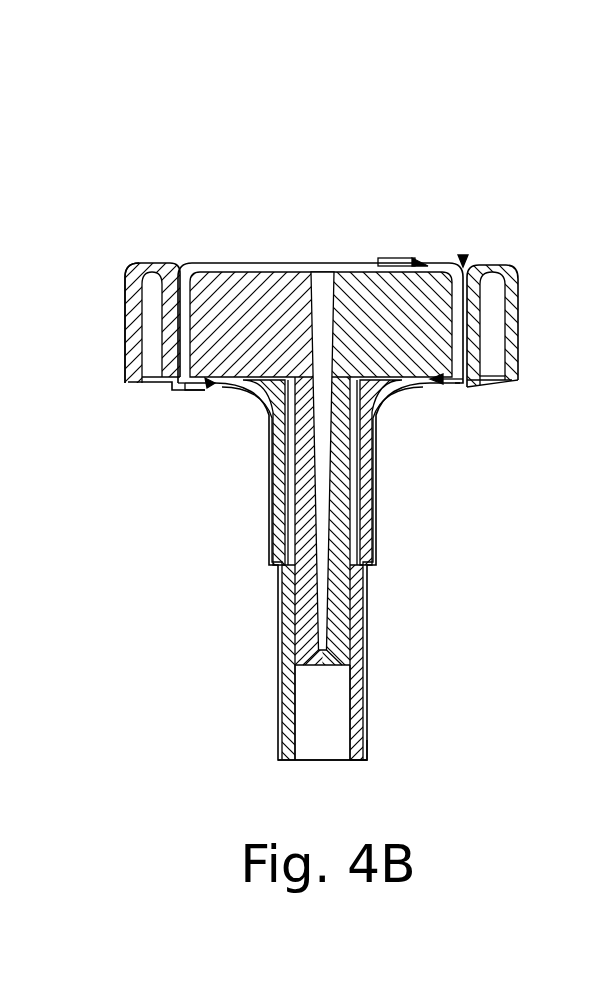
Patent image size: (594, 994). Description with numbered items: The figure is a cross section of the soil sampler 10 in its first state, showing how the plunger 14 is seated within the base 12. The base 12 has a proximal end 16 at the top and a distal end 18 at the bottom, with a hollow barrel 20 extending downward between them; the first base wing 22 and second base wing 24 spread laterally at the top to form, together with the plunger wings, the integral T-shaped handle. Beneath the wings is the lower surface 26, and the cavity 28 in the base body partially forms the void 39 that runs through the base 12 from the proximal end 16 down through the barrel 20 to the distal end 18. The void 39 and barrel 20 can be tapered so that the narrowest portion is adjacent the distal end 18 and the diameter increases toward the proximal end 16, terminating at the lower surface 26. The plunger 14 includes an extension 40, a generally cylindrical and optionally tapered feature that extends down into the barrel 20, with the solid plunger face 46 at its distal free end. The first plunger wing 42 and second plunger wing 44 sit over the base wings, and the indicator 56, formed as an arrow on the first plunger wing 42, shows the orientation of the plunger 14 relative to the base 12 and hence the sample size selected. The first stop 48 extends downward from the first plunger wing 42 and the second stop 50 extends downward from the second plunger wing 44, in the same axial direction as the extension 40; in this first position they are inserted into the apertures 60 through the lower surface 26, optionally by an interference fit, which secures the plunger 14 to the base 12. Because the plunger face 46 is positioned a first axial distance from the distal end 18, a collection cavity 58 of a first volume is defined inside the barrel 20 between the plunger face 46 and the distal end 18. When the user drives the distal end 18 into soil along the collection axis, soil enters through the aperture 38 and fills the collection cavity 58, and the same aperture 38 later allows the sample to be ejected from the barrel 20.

The soil sampler 10 is at (264, 132).
The base 12 is at (380, 537).
The plunger 14 is at (284, 550).
The proximal end 16 is at (162, 262).
The distal end 18 is at (342, 761).
The barrel 20 is at (365, 653).
The first base wing 22 is at (512, 265).
The second base wing 24 is at (125, 330).
The lower surface 26 is at (450, 390).
The cavity 28 is at (463, 258).
The aperture 38 is at (306, 767).
The void 39 is at (365, 452).
The extension 40 is at (308, 622).
The first plunger wing 42 is at (438, 262).
The second plunger wing 44 is at (202, 263).
The plunger face 46 is at (317, 667).
The first stop 48 is at (410, 385).
The second stop 50 is at (222, 385).
The indicator 56 is at (393, 257).
The collection cavity 58 is at (358, 701).
The apertures 60 is at (183, 390).